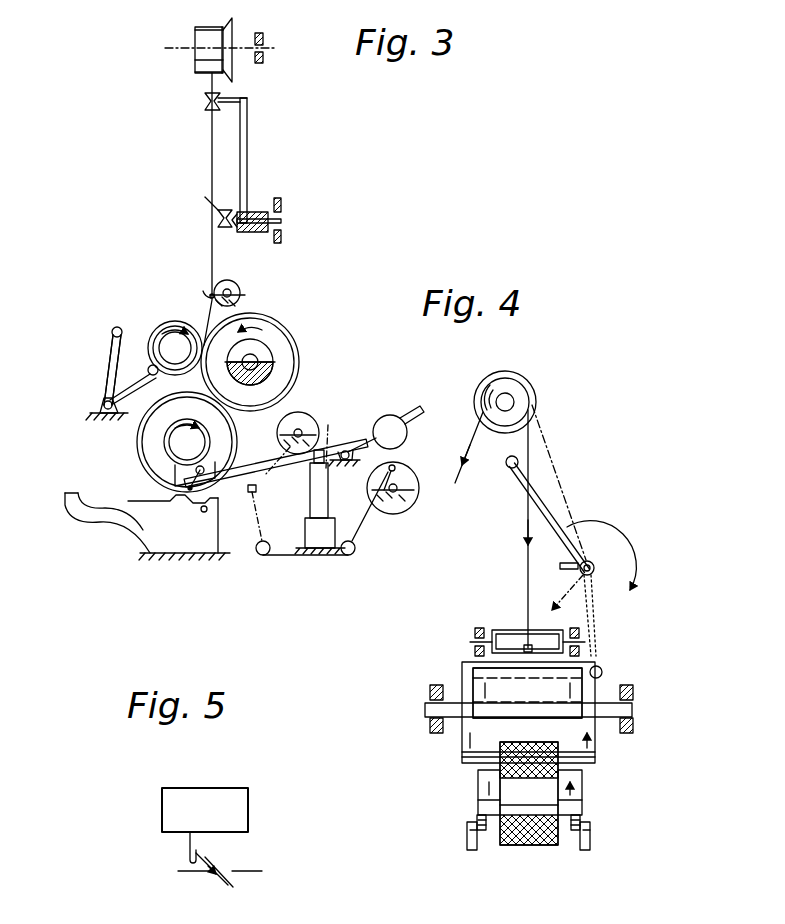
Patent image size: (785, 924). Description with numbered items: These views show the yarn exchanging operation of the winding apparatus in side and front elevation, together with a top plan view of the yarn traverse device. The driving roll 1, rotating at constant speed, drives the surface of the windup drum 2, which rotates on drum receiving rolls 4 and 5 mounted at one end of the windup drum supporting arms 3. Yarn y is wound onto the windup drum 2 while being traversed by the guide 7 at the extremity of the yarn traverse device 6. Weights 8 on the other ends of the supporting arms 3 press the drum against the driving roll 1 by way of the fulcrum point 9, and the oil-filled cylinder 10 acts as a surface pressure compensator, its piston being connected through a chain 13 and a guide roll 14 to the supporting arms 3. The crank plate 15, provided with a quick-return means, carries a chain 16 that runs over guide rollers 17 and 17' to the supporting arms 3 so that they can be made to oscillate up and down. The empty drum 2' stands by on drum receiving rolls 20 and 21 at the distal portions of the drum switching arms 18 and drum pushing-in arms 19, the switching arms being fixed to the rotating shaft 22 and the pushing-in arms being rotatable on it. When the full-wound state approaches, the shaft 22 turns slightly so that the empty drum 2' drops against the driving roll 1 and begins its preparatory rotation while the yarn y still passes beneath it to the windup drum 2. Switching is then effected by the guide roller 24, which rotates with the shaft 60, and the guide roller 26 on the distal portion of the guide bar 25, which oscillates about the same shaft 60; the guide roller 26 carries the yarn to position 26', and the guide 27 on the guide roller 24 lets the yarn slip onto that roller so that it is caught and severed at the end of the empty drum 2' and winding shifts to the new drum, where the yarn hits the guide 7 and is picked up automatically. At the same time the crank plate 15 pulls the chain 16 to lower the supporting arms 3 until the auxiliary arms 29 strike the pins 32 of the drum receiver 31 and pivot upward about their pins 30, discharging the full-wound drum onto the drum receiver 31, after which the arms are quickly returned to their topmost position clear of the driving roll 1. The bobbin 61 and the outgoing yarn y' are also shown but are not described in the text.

In FIG. 3, the driving roll 1 is at (292, 338).
In FIG. 4, the driving roll 1 is at (462, 672).
In FIG. 3, the windup drum 2 is at (174, 442).
In FIG. 4, the windup drum 2 is at (511, 792).
In FIG. 3, the empty drum 2' is at (172, 329).
In FIG. 4, the empty drum 2' is at (512, 670).
In FIG. 3, the windup drum supporting arms 3 is at (333, 429).
In FIG. 4, the windup drum supporting arms 3 is at (466, 840).
In FIG. 3, the drum receiving roll 4 is at (168, 470).
In FIG. 4, the drum receiving roll 4 is at (481, 850).
In FIG. 3, the drum receiving roll 5 is at (238, 440).
In FIG. 3, the yarn traverse device 6 is at (240, 288).
In FIG. 4, the yarn traverse device 6 is at (493, 632).
In FIG. 5, the yarn traverse device 6 is at (205, 788).
In FIG. 3, the guide 7 is at (210, 297).
In FIG. 4, the guide 7 is at (526, 646).
In FIG. 5, the guide 7 is at (188, 850).
In FIG. 3, the weight 8 is at (395, 415).
In FIG. 3, the fulcrum point 9 is at (347, 452).
In FIG. 3, the oil-filled cylinder 10 is at (305, 530).
In FIG. 3, the chain 13 is at (268, 462).
In FIG. 3, the guide roll 14 is at (304, 415).
In FIG. 3, the crank plate 15 is at (410, 507).
In FIG. 3, the chain 16 is at (362, 524).
In FIG. 3, the guide roller 17 is at (363, 565).
In FIG. 3, the guide roller 17' is at (302, 568).
In FIG. 3, the drum switching arm 18 is at (140, 378).
In FIG. 3, the drum pushing-in arm 19 is at (105, 358).
In FIG. 3, the drum receiving roll 20 is at (175, 348).
In FIG. 3, the drum receiving roll 21 is at (117, 326).
In FIG. 3, the rotating shaft 22 is at (104, 405).
In FIG. 3, the guide roller 24 is at (228, 228).
In FIG. 4, the guide roller 24 is at (598, 560).
In FIG. 3, the guide bar 25 is at (248, 130).
In FIG. 4, the guide bar 25 is at (540, 496).
In FIG. 3, the guide roller 26 is at (185, 104).
In FIG. 4, the guide roller 26 is at (498, 482).
In FIG. 4, the position of guide roller 26' is at (627, 658).
In FIG. 3, the guide 27 is at (218, 208).
In FIG. 4, the guide 27 is at (568, 564).
In FIG. 3, the auxiliary arm 29 is at (202, 505).
In FIG. 3, the pin 30 is at (172, 490).
In FIG. 3, the drum receiver 31 is at (85, 535).
In FIG. 3, the pin 32 is at (244, 513).
In FIG. 3, the shaft 60 is at (255, 212).
In FIG. 3, the bobbin 61 is at (196, 40).
In FIG. 4, the bobbin 61 is at (497, 388).
In FIG. 3, the yarn y is at (192, 209).
In FIG. 4, the yarn y is at (526, 526).
In FIG. 3, the yarn y' is at (109, 432).
In FIG. 4, the yarn y' is at (529, 812).